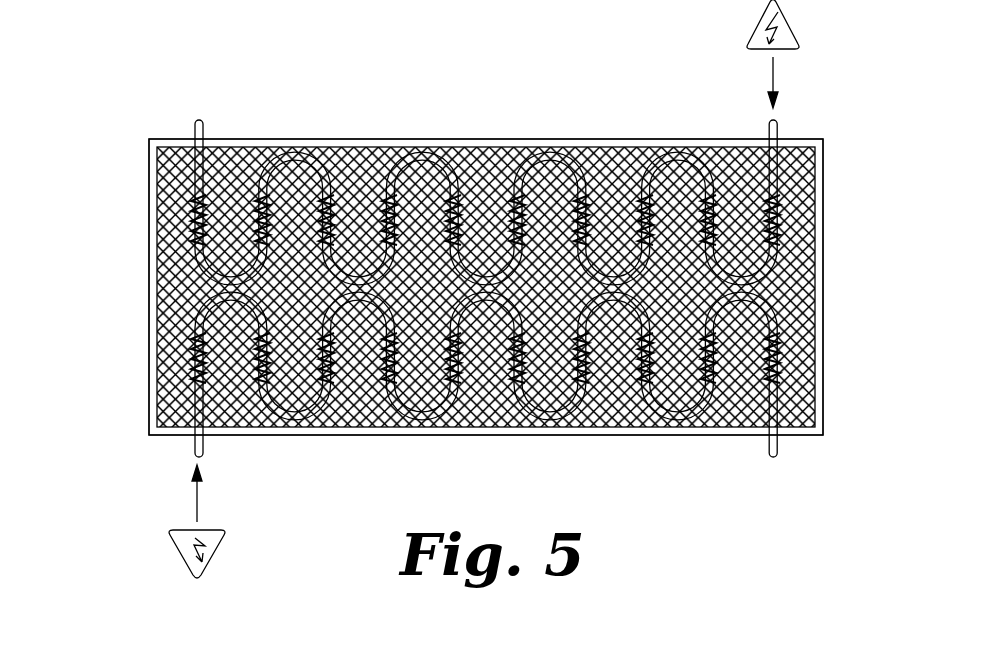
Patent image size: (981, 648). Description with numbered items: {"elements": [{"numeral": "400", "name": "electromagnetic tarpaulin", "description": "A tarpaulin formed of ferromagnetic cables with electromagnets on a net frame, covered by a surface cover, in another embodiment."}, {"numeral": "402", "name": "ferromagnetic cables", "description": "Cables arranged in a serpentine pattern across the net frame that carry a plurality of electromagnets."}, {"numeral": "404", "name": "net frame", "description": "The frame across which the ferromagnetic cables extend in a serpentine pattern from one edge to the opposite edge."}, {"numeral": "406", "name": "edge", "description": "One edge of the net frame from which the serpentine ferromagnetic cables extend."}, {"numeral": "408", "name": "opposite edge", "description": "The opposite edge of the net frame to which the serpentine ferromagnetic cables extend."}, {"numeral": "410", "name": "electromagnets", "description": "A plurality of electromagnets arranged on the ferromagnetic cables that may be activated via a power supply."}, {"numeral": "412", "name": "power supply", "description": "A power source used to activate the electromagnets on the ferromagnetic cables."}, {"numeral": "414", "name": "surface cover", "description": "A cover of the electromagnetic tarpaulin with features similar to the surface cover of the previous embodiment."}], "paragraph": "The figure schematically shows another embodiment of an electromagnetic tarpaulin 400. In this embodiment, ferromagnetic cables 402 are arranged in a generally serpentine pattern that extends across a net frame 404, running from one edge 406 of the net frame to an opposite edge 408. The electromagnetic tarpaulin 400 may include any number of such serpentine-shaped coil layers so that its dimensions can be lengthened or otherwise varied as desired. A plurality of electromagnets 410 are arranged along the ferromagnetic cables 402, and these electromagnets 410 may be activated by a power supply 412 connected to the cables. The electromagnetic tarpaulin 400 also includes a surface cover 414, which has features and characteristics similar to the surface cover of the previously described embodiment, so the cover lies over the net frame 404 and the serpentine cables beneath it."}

The heater assembly 400 is at (87, 142).
The heating tube 402 is at (773, 177).
The outer housing 404 is at (150, 253).
The inner wall 406 is at (167, 308).
The insulating fill 408 is at (799, 349).
The heating coil 410 is at (380, 216).
The power source 412 is at (177, 552).
The fill material 414 is at (487, 188).